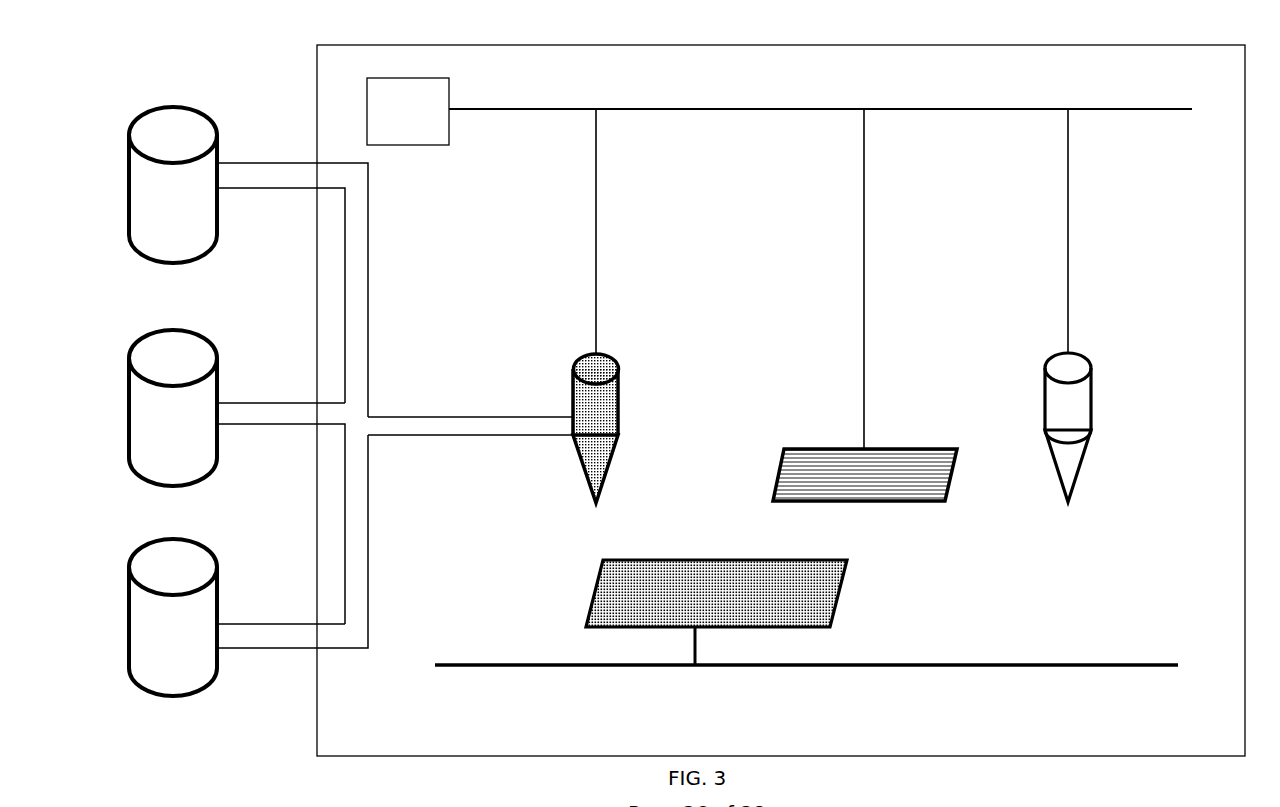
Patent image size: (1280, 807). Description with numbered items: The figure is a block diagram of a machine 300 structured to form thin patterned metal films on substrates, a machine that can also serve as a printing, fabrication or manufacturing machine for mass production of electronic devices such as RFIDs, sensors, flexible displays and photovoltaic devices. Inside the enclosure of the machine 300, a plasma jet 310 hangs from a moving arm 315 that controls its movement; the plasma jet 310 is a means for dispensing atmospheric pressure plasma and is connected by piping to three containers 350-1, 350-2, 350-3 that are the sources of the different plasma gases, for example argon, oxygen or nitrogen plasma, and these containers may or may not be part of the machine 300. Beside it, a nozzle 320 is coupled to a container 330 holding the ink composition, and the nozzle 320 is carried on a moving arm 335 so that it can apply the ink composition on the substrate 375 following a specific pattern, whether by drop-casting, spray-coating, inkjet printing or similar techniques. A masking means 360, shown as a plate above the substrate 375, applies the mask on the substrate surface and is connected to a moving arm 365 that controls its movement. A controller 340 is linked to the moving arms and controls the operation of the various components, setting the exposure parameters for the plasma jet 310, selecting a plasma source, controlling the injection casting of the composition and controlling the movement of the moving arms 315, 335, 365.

The machine 300 is at (790, 46).
The plasma jet 310 is at (573, 410).
The moving arm 315 is at (596, 283).
The nozzle 320 is at (1078, 473).
The container 330 is at (1045, 378).
The moving arm 335 is at (1068, 258).
The controller 340 is at (779, 111).
The container 350-1 is at (217, 132).
The container 350-2 is at (217, 370).
The container 350-3 is at (217, 595).
The masking means 360 is at (882, 501).
The moving arm 365 is at (864, 270).
The substrate 375 is at (806, 642).